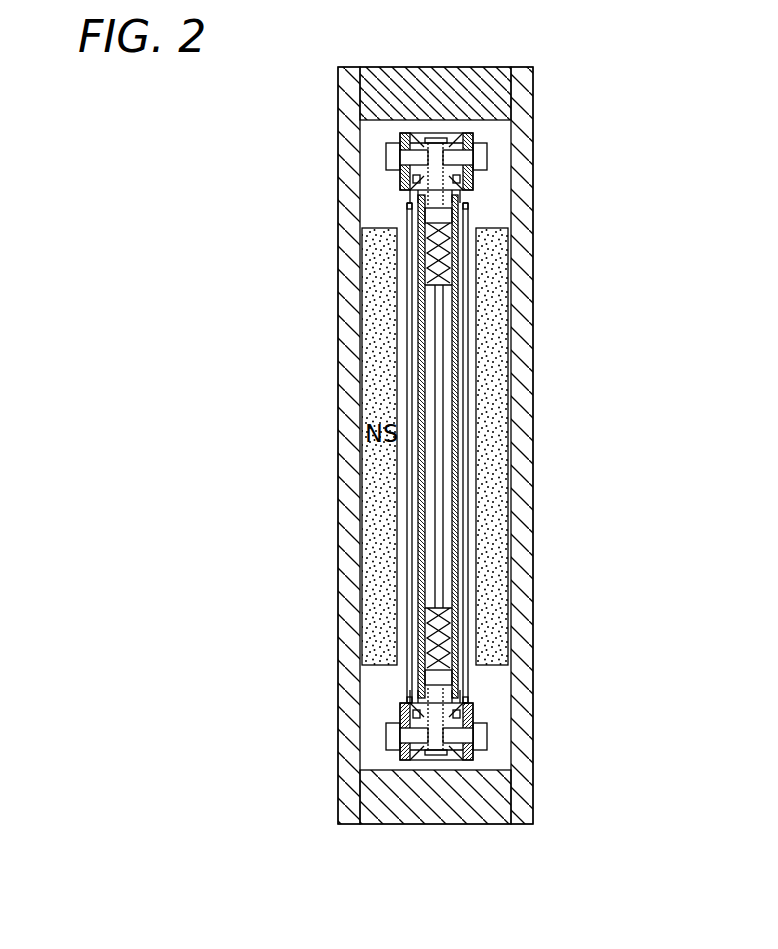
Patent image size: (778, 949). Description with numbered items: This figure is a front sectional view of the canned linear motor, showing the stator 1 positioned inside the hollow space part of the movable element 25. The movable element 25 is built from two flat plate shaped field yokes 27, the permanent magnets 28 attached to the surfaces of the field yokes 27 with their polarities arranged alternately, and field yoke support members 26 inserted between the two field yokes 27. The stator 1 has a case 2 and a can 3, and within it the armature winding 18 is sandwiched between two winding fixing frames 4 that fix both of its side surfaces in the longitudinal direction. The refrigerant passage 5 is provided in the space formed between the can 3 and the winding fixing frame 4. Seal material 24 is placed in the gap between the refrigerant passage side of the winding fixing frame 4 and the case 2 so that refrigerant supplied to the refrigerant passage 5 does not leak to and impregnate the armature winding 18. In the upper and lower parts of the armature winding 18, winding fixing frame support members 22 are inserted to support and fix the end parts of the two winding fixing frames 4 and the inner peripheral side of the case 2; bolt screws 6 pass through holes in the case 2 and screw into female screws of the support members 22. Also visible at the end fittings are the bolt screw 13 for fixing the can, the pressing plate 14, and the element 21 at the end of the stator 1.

The stator 1 is at (492, 147).
The case 2 is at (456, 135).
The can 3 is at (407, 367).
The winding fixing frame 4 is at (452, 292).
The refrigerant passage 5 is at (458, 482).
The bolt screw 6 is at (409, 135).
The bolt screw for fixing the can 13 is at (390, 163).
The pressing plate 14 is at (408, 182).
The armature winding 18 is at (452, 242).
The seal ring 21 is at (473, 182).
The winding fixing frame support member 22 is at (419, 197).
The seal material 24 is at (410, 202).
The movable element 25 is at (493, 480).
The field yoke support member 26 is at (478, 810).
The field yoke 27 is at (527, 375).
The permanent magnet 28 is at (493, 393).